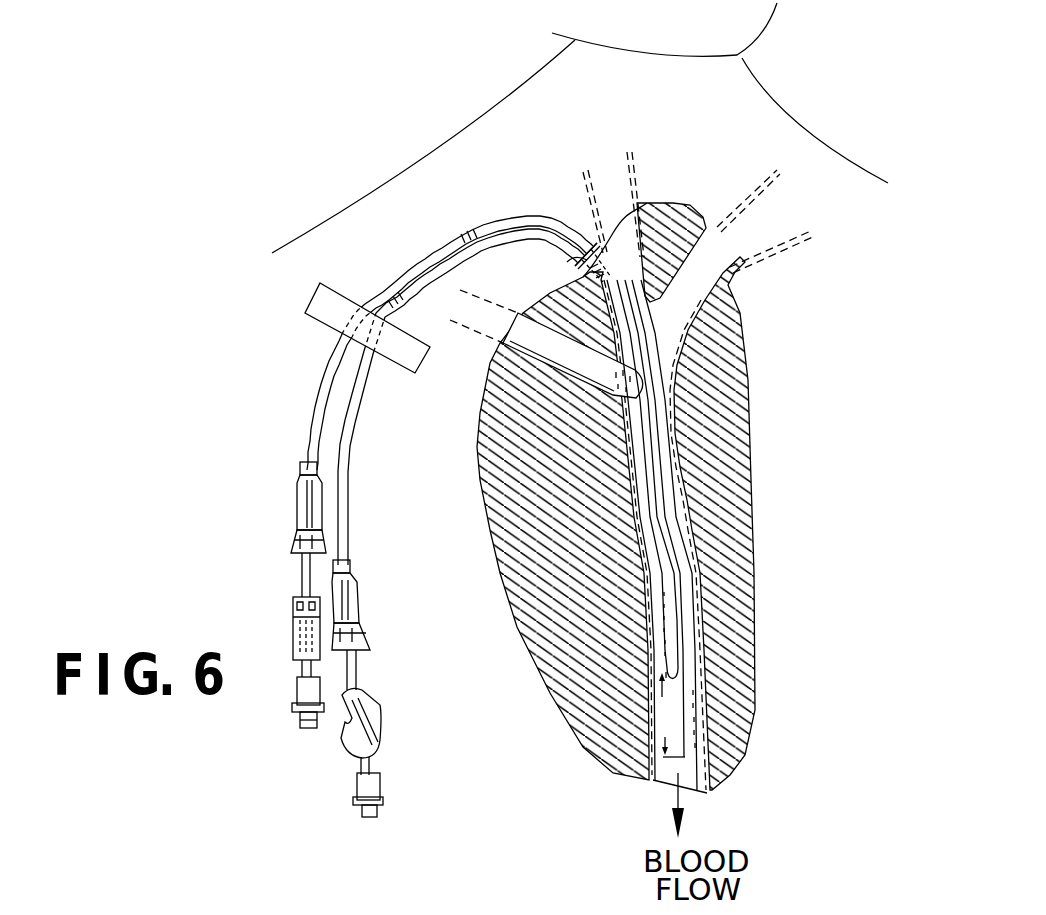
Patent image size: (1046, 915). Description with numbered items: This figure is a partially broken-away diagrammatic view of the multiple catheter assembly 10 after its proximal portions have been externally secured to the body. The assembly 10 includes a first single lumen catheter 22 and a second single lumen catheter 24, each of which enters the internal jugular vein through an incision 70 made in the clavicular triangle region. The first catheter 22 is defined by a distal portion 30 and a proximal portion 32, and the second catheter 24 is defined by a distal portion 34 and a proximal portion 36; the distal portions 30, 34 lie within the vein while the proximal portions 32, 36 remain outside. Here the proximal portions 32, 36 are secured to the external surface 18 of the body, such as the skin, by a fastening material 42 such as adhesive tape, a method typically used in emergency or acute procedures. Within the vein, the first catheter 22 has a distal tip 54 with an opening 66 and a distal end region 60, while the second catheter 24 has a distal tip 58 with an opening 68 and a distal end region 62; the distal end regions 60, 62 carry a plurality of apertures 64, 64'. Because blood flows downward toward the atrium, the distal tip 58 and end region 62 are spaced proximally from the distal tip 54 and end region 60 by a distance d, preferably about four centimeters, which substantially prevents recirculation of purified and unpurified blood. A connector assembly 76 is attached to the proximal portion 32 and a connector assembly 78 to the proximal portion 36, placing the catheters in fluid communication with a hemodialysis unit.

The multiple catheter assembly 10 is at (302, 393).
The external surface of the body 18 is at (353, 287).
The first single lumen catheter 22 is at (439, 249).
The second single lumen catheter 24 is at (352, 404).
The distal portion of the first catheter 30 is at (650, 573).
The proximal portion of the first catheter 32 is at (307, 421).
The distal portion of the second catheter 34 is at (681, 577).
The proximal portion of the second catheter 36 is at (349, 507).
The fastening material 42 is at (310, 293).
The distal tip of the first catheter 54 is at (690, 753).
The distal tip of the second catheter 58 is at (668, 667).
The distal end region of the first catheter 60 is at (698, 730).
The distal end region of the second catheter 62 is at (666, 659).
The apertures 64 is at (752, 705).
The apertures 64' is at (567, 617).
The opening at the distal tip of the first catheter 66 is at (713, 770).
The opening at the distal tip of the second catheter 68 is at (689, 677).
The incision 70 is at (579, 254).
The connector assembly 76 is at (297, 503).
The connector assembly 78 is at (360, 612).